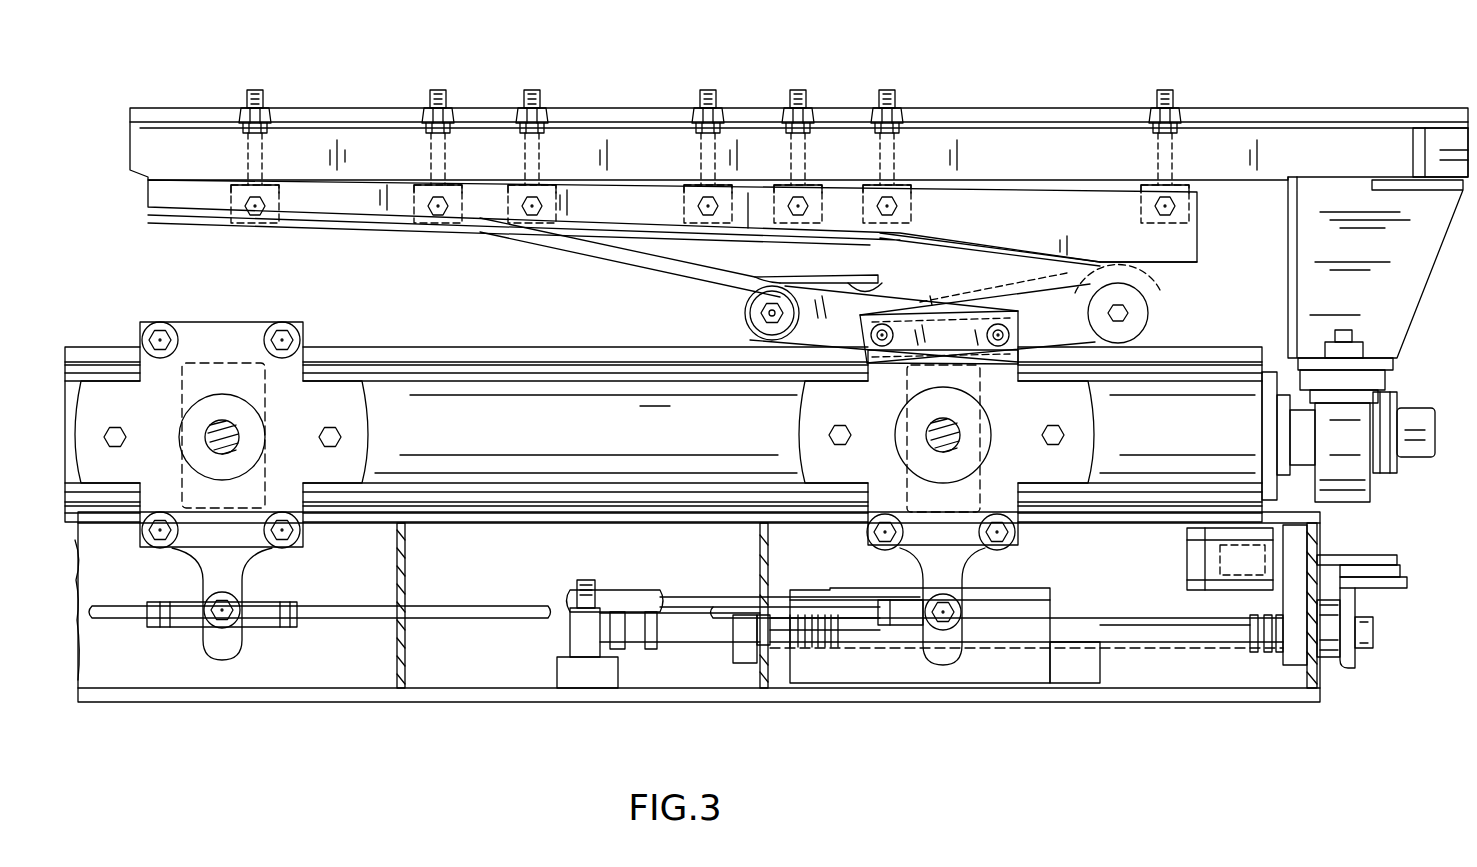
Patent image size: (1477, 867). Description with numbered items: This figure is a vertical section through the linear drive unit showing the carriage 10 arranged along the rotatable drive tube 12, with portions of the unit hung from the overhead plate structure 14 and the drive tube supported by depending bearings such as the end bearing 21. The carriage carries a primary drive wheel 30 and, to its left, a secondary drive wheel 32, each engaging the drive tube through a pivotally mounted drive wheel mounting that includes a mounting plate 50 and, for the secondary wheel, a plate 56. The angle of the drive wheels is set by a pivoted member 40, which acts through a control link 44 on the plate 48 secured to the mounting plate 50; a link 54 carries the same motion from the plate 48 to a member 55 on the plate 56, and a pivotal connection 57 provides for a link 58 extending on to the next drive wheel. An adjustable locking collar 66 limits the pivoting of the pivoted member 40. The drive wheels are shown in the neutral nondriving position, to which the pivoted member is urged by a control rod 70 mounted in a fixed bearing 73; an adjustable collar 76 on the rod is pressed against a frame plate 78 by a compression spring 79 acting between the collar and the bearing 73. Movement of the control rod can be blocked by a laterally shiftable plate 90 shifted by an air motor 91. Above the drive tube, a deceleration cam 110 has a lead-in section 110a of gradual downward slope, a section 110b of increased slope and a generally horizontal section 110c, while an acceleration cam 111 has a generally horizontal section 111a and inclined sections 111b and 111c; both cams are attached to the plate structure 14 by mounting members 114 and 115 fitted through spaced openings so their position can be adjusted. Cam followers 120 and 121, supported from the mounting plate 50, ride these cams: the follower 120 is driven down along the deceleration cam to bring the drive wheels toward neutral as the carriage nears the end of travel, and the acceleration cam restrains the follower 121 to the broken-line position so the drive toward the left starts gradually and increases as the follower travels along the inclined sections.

The carriage 10 is at (362, 716).
The drive tube 12 is at (512, 372).
The plate structure 14 is at (1035, 130).
The end bearing 21 is at (1355, 485).
The primary drive wheel 30 is at (968, 492).
The secondary drive wheel 32 is at (235, 372).
The pivoted member 40 is at (610, 662).
The control link 44 is at (688, 598).
The plate 48 is at (958, 566).
The mounting plate 50 is at (1080, 425).
The link 54 is at (470, 604).
The member 55 is at (242, 570).
The plate 56 is at (320, 397).
The pivotal connection 57 is at (232, 624).
The link 58 is at (128, 604).
The adjustable locking collar 66 is at (655, 648).
The control rod 70 is at (1200, 632).
The bearing 73 is at (1296, 668).
The adjustable collar 76 is at (782, 648).
The frame plate 78 is at (768, 663).
The compression spring 79 is at (832, 650).
The laterally shiftable plate 90 is at (1355, 590).
The air motor 91 is at (1188, 566).
The deceleration cam 110 is at (700, 250).
The lead-in section 110a is at (225, 225).
The section of increased slope 110b is at (560, 242).
The generally horizontal section 110c is at (873, 284).
The acceleration cam 111 is at (1190, 240).
The generally horizontal section 111a is at (1170, 265).
The inclined section 111b is at (990, 248).
The inclined section 111c is at (738, 228).
The mounting member 114 is at (804, 100).
The mounting member 115 is at (895, 100).
The cam follower 120 is at (745, 312).
The cam follower 121 is at (1148, 313).